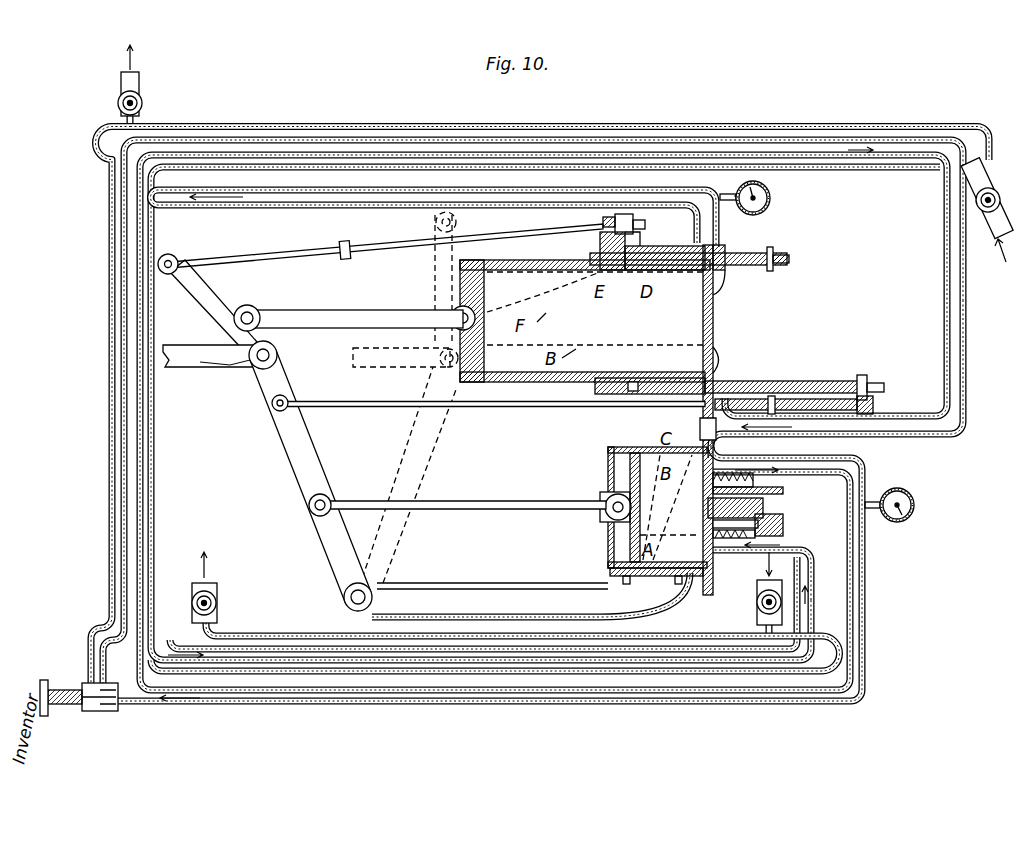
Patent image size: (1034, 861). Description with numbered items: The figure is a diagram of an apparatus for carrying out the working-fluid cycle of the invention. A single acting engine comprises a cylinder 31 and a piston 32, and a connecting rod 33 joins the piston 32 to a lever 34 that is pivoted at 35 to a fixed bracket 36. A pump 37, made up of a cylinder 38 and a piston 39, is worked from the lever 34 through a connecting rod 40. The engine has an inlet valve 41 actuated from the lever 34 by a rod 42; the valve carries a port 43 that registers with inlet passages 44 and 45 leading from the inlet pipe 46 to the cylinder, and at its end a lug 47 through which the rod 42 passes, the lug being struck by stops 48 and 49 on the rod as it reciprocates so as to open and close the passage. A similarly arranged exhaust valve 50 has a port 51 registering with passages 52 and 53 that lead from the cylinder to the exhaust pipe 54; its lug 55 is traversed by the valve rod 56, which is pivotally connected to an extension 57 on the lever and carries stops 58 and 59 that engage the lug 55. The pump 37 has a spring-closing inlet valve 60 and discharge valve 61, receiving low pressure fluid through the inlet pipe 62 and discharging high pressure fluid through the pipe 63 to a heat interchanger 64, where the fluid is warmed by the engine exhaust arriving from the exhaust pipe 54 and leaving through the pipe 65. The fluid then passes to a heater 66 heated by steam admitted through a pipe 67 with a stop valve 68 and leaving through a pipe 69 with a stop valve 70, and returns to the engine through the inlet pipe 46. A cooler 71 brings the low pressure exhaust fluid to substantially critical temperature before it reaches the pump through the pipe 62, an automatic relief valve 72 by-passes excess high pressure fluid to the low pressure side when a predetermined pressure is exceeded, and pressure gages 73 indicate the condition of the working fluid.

The cylinder 31 is at (544, 266).
The piston 32 is at (486, 300).
The connecting rod 33 is at (337, 313).
The lever 34 is at (312, 448).
The pivot 35 is at (351, 597).
The fixed bracket 36 is at (484, 583).
The pump 37 is at (657, 562).
The cylinder 38 is at (638, 453).
The piston 39 is at (608, 474).
The connecting rod 40 is at (478, 500).
The inlet valve 41 is at (595, 385).
The rod 42 is at (486, 408).
The port 43 is at (637, 381).
The inlet passage 44 is at (700, 421).
The inlet passage 45 is at (719, 362).
The inlet pipe 46 is at (967, 410).
The lug 47 is at (863, 384).
The stop 48 is at (878, 392).
The stop 49 is at (780, 420).
The exhaust valve 50 is at (790, 260).
The port 51 is at (724, 250).
The passage 52 is at (724, 292).
The passage 53 is at (710, 240).
The exhaust pipe 54 is at (660, 194).
The lug 55 is at (600, 221).
The valve rod 56 is at (277, 258).
The extension 57 is at (208, 281).
The stop 58 is at (352, 247).
The stop 59 is at (652, 250).
The inlet valve 60 is at (710, 523).
The discharge valve 61 is at (711, 491).
The inlet pipe 62 is at (806, 548).
The pipe 63 is at (858, 473).
The heat interchanger 64 is at (107, 388).
The pipe 65 is at (168, 634).
The heater 66 is at (456, 116).
The pipe 67 is at (985, 250).
The stop valve 68 is at (990, 186).
The pipe 69 is at (140, 80).
The stop valve 70 is at (119, 103).
The cooler 71 is at (306, 634).
The automatic relief valve 72 is at (94, 712).
The pressure gage 73 is at (771, 198).